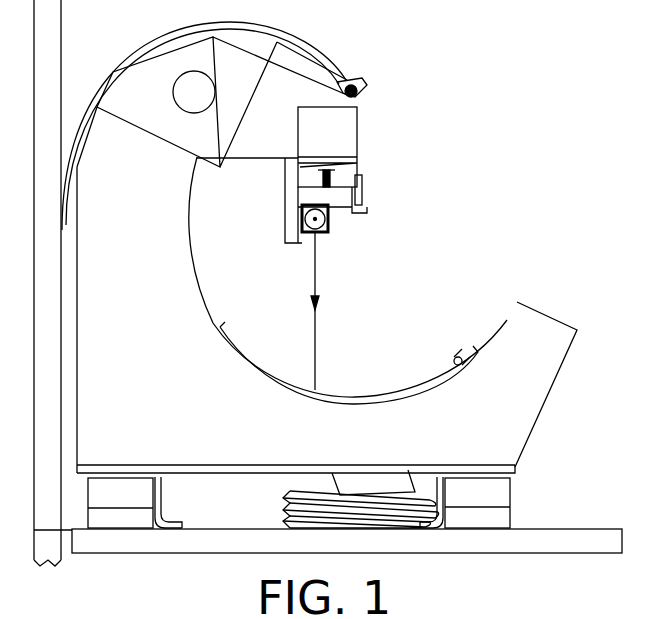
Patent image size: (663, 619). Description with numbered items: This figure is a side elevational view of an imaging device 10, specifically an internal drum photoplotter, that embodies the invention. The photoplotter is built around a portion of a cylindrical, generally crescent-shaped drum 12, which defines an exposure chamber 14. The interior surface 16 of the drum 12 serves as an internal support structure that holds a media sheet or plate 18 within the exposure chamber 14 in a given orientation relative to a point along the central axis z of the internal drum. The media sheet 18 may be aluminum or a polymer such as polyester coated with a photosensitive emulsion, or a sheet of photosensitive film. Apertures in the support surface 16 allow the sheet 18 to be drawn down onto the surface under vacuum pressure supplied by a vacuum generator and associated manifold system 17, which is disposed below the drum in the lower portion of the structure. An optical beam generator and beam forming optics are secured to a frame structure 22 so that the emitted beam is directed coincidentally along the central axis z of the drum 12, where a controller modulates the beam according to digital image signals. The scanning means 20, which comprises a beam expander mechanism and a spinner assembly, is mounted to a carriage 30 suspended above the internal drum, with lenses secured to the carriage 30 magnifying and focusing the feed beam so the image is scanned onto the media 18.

The imaging device 10 is at (423, 160).
The drum 12 is at (505, 320).
The exposure chamber 14 is at (288, 275).
The interior surface 16 is at (461, 365).
The vacuum generator and associated manifold system 17 is at (278, 499).
The media sheet or plate 18 is at (382, 391).
The scanning means 20 is at (352, 231).
The frame structure 22 is at (160, 227).
The carriage 30 is at (285, 188).
The central axis Z is at (320, 232).